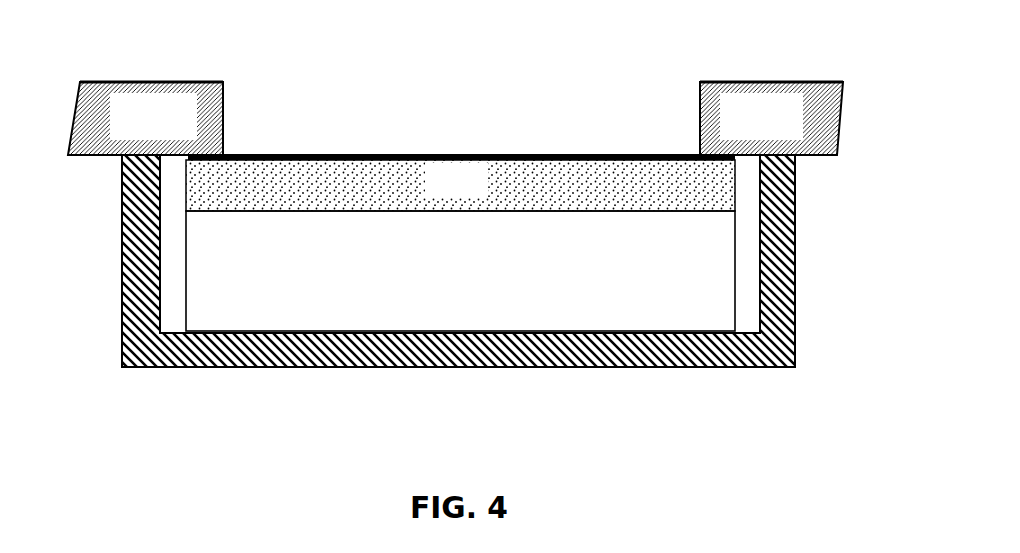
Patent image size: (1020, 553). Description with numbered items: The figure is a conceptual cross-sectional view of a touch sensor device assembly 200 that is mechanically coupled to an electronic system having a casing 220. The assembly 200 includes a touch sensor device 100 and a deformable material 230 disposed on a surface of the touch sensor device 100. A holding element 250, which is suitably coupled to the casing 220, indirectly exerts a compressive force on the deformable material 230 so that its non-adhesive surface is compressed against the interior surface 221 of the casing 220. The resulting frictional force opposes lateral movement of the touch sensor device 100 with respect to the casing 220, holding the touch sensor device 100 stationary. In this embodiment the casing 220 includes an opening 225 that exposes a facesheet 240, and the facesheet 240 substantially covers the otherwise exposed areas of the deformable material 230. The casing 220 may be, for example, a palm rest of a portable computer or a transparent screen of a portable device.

The touch sensor device 100 is at (485, 289).
The touch sensor device assembly 200 is at (428, 286).
The casing 220 is at (177, 132).
The interior surface of casing 221 is at (103, 156).
The opening 225 is at (436, 111).
The deformable material 230 is at (480, 196).
The facesheet 240 is at (376, 152).
The holding element 250 is at (462, 366).